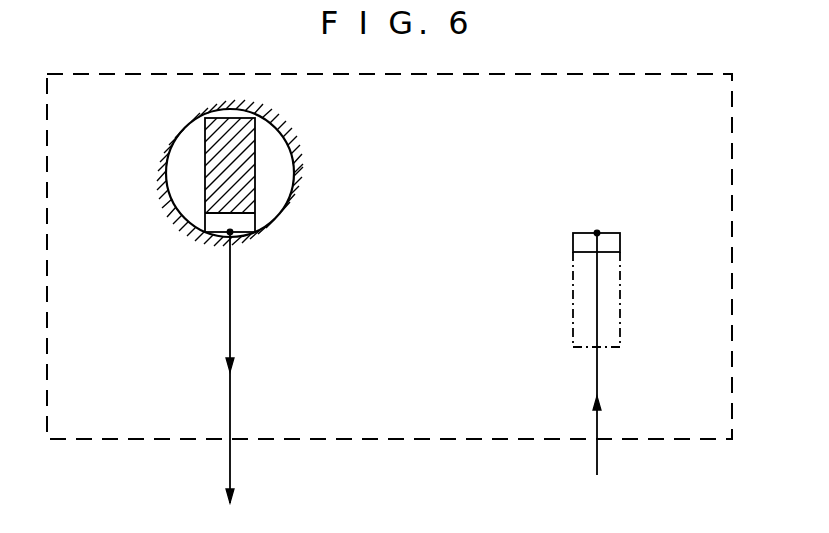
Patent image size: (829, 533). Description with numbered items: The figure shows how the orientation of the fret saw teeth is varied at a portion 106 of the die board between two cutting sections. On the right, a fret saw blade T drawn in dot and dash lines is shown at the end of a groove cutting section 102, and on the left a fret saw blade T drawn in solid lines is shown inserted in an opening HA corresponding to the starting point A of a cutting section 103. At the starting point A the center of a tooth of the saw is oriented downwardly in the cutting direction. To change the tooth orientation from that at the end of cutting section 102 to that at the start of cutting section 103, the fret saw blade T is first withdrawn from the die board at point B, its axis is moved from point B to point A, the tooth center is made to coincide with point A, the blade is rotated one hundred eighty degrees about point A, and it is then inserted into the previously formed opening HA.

The portion 106 is at (650, 73).
The opening HA is at (287, 148).
The fret saw blade T is at (205, 150).
The starting point A is at (231, 236).
The point B is at (597, 230).
The groove cutting section 102 is at (600, 458).
The cutting section 103 is at (232, 455).